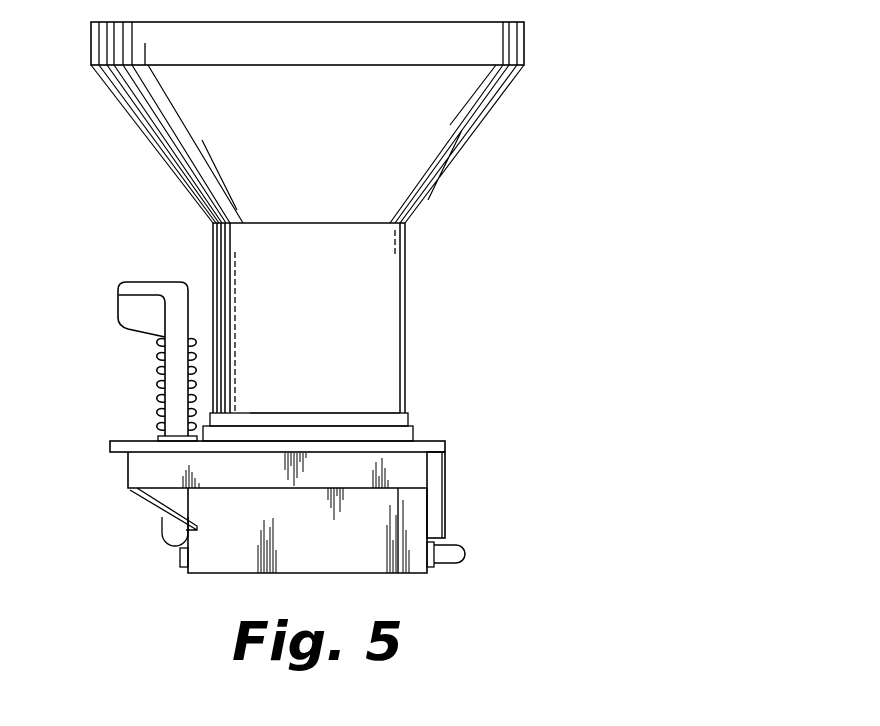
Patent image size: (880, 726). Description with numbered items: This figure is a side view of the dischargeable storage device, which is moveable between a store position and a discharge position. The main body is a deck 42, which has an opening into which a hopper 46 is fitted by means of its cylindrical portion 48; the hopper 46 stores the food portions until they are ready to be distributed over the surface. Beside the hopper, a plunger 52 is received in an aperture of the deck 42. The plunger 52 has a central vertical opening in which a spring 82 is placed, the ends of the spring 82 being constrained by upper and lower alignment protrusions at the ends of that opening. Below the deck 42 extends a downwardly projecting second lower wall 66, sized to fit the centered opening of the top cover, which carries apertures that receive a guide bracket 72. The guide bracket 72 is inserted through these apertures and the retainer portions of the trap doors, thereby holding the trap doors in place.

The deck 42 is at (428, 440).
The hopper 46 is at (458, 135).
The cylindrical portion 48 is at (387, 270).
The plunger 52 is at (148, 282).
The second lower wall 66 is at (247, 535).
The guide bracket 72 is at (468, 556).
The spring 82 is at (157, 380).